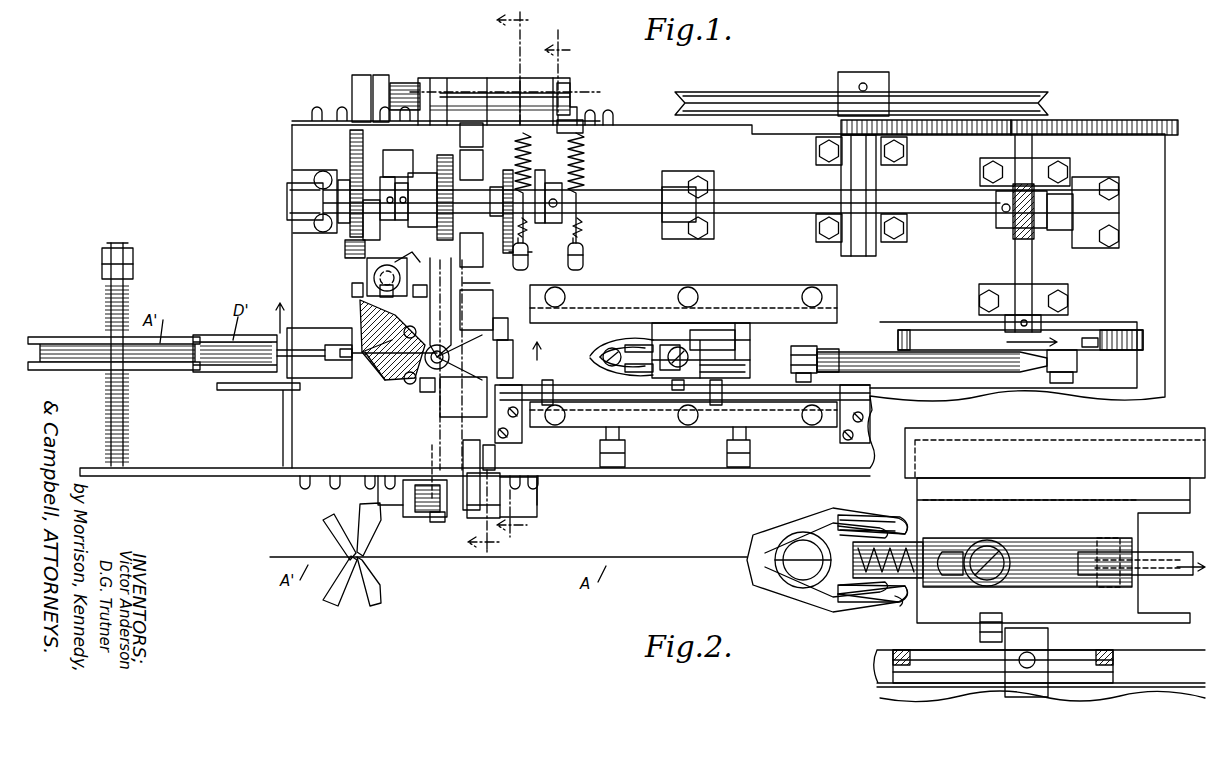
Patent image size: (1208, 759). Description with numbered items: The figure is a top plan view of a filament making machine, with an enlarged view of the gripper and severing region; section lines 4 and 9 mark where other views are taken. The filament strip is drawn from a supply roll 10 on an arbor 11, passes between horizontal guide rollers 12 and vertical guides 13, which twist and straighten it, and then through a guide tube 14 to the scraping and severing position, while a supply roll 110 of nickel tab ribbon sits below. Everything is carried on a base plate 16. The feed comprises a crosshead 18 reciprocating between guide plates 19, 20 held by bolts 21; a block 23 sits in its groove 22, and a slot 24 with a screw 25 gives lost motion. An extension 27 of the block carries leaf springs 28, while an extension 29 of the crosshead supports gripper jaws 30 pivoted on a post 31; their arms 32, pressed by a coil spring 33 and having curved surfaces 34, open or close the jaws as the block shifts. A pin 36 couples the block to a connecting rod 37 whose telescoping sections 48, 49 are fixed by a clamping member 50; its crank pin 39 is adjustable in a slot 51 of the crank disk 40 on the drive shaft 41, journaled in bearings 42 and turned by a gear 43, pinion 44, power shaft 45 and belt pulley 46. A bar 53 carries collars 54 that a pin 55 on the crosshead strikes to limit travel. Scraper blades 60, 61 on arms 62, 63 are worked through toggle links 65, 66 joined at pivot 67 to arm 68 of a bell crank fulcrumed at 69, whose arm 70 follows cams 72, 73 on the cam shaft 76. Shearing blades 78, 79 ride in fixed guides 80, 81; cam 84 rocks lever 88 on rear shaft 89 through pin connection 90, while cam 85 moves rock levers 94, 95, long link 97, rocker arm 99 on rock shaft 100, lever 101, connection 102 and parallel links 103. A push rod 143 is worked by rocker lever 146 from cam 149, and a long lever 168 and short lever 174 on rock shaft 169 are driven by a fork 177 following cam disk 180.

The section line 4 is at (525, 295).
The section line 9 is at (520, 274).
The filament supply roll 10 is at (147, 372).
The arbor 11 is at (120, 248).
The horizontal guide rollers 12 is at (330, 330).
The vertical guides 13 is at (335, 362).
The guide tube 14 is at (352, 360).
The base plate 16 is at (622, 306).
The crosshead 18 is at (750, 328).
The guide plate 19 is at (867, 381).
The front guide plate 20 is at (867, 552).
The bolts 21 is at (811, 292).
The longitudinal groove 22 is at (745, 370).
The block 23 is at (705, 335).
The longitudinal slot 24 is at (660, 350).
The screw 25 is at (672, 366).
The narrow extension 27 is at (615, 349).
The leaf springs 28 is at (896, 540).
The crosshead extension 29 is at (615, 346).
The gripper jaws 30 is at (765, 545).
The post 31 is at (800, 535).
The jaw arms 32 is at (637, 345).
The coil spring 33 is at (842, 518).
The curved surfaces 34 is at (896, 606).
The pin 36 is at (1105, 538).
The connecting rod 37 is at (843, 358).
The crank pin 39 is at (1073, 380).
The crank disk 40 is at (965, 336).
The drive shaft 41 is at (1036, 258).
The bearings 42 is at (1016, 161).
The gear 43 is at (1097, 120).
The pinion 44 is at (841, 127).
The power shaft 45 is at (841, 182).
The belt pulley 46 is at (786, 92).
The telescoping section 48 is at (797, 347).
The telescoping section 49 is at (879, 355).
The clamping member 50 is at (811, 378).
The slot 51 is at (1092, 336).
The stop bar 53 is at (780, 400).
The stop collars 54 is at (547, 405).
The shoulder pin 55 is at (678, 392).
The scraper blade 60 is at (322, 598).
The scraper blade 61 is at (436, 322).
The scraper arm 62 is at (407, 384).
The scraper arm 63 is at (418, 338).
The toggle link 65 is at (385, 385).
The toggle link 66 is at (392, 340).
The pivot 67 is at (390, 365).
The bell crank arm 68 is at (386, 297).
The fulcrum 69 is at (374, 274).
The bell crank arm 70 is at (409, 262).
The cam 72 is at (412, 187).
The cam 73 is at (455, 151).
The cam shaft 76 is at (287, 199).
The shearing member 78 is at (493, 298).
The shearing member 79 is at (509, 443).
The fixed guide 80 is at (508, 334).
The fixed guide 81 is at (462, 428).
The cam 84 is at (513, 258).
The cam 85 is at (568, 258).
The lever 88 is at (490, 78).
The rear shaft 89 is at (578, 100).
The pin connection 90 is at (471, 195).
The rock lever 94 is at (535, 88).
The rock lever 95 is at (432, 85).
The long link 97 is at (430, 455).
The rocker arm 99 is at (432, 522).
The rock shaft 100 is at (405, 506).
The lever 101 is at (470, 518).
The connection 102 is at (512, 503).
The parallel links 103 is at (497, 458).
The tab ribbon supply roll 110 is at (217, 333).
The push rod 143 is at (425, 392).
The rocker lever 146 is at (345, 252).
The cam 149 is at (412, 153).
The long lever 168 is at (519, 359).
The rock shaft 169 is at (390, 76).
The short lever 174 is at (365, 75).
The fork 177 is at (372, 185).
The cam disk 180 is at (350, 137).